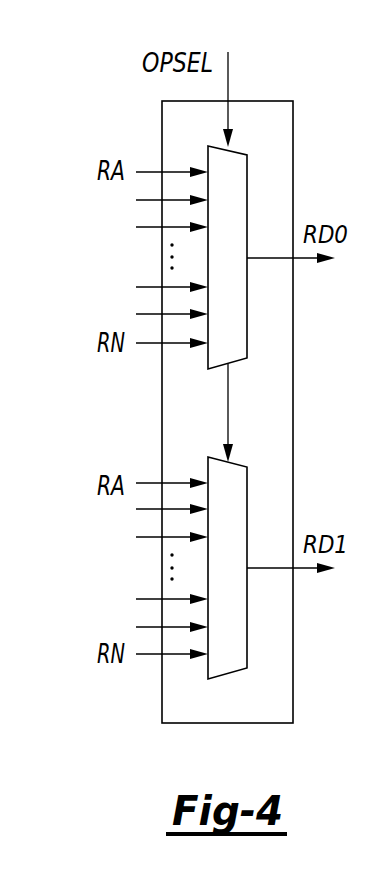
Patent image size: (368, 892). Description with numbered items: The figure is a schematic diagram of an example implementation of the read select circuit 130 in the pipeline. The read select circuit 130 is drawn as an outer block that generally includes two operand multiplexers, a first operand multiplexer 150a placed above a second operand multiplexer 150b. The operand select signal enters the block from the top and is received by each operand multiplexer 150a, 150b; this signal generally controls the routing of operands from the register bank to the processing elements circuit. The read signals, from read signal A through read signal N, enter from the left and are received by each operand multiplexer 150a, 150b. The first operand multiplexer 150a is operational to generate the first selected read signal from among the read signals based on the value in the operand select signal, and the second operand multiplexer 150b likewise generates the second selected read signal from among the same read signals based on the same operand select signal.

The read select circuit 130 is at (265, 101).
The first operand multiplexer 150a is at (247, 173).
The second operand multiplexer 150b is at (247, 485).